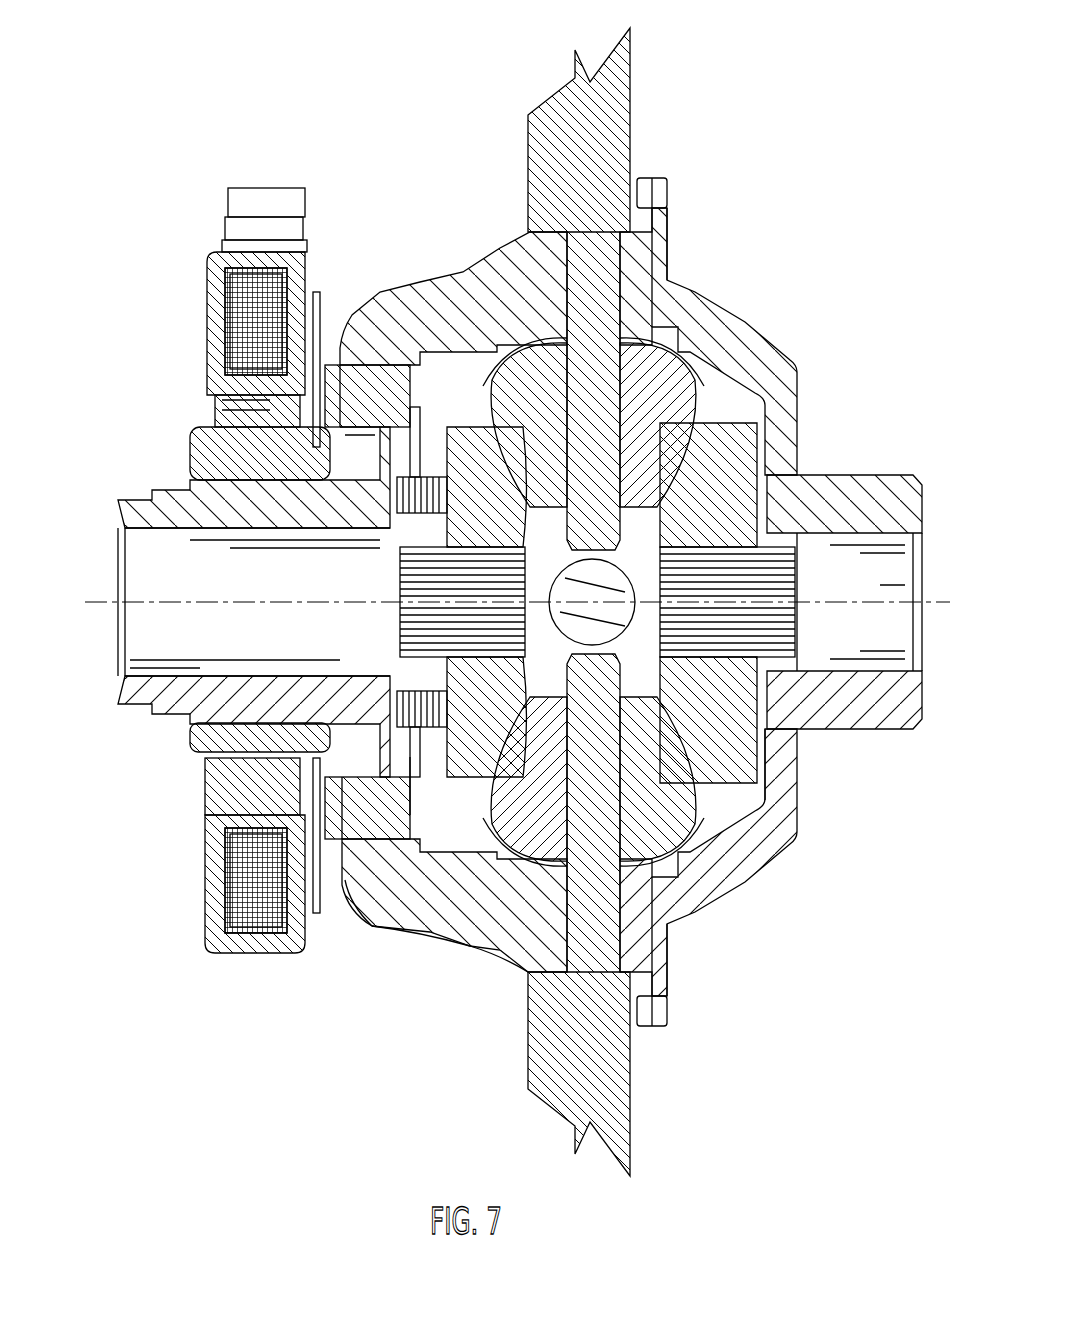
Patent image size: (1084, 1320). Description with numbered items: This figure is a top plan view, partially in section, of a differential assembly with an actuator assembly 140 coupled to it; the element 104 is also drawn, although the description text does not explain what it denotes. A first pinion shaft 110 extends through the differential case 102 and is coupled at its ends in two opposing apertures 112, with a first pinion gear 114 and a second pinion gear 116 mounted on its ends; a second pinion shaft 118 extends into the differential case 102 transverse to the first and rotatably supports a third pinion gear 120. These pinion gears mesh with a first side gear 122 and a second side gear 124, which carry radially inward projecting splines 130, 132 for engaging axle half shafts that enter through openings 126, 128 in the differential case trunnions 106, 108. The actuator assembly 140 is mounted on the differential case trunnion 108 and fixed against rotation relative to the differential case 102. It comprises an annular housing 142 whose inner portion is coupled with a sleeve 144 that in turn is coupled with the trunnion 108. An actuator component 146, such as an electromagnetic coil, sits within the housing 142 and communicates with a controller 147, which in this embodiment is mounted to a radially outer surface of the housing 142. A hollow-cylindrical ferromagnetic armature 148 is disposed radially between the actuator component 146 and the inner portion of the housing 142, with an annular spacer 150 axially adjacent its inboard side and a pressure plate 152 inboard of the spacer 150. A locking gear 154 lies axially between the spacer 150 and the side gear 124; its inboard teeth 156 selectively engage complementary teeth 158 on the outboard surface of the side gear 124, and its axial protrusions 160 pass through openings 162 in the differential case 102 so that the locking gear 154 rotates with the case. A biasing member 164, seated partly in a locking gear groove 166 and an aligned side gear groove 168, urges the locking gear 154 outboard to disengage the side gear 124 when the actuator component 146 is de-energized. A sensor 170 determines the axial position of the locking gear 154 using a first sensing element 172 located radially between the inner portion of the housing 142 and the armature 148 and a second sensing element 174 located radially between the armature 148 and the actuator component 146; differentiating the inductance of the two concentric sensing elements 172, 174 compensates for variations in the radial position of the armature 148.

The differential case 102 is at (457, 287).
The ring gear 104 is at (572, 135).
The differential case trunnion 106 is at (868, 478).
The differential case trunnion 108 is at (135, 502).
The first pinion shaft 110 is at (593, 300).
The apertures 112 is at (593, 1010).
The first pinion gear 114 is at (665, 352).
The second pinion gear 116 is at (735, 858).
The second pinion shaft 118 is at (607, 619).
The third pinion gear 120 is at (660, 545).
The first side gear 122 is at (905, 487).
The second side gear 124 is at (478, 762).
The opening 126 is at (900, 645).
The opening 128 is at (135, 668).
The splines 130 is at (800, 695).
The splines 132 is at (430, 585).
The actuator assembly 140 is at (240, 163).
The housing 142 is at (215, 258).
The sleeve 144 is at (200, 450).
The actuator component 146 is at (235, 305).
The controller 147 is at (290, 200).
The armature 148 is at (232, 345).
The annular spacer 150 is at (205, 760).
The pressure plate 152 is at (318, 310).
The locking gear 154 is at (353, 876).
The teeth 156 is at (382, 835).
The teeth 158 is at (432, 758).
The protrusions 160 is at (392, 290).
The openings 162 is at (357, 433).
The biasing member 164 is at (410, 700).
The groove 166 is at (420, 722).
The groove 168 is at (445, 500).
The sensor 170 is at (145, 875).
The first sensing element 172 is at (215, 415).
The second sensing element 174 is at (205, 800).